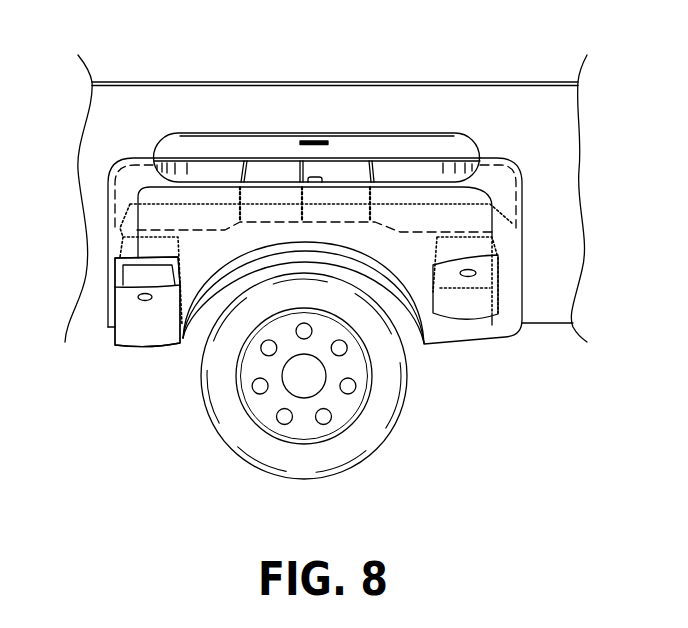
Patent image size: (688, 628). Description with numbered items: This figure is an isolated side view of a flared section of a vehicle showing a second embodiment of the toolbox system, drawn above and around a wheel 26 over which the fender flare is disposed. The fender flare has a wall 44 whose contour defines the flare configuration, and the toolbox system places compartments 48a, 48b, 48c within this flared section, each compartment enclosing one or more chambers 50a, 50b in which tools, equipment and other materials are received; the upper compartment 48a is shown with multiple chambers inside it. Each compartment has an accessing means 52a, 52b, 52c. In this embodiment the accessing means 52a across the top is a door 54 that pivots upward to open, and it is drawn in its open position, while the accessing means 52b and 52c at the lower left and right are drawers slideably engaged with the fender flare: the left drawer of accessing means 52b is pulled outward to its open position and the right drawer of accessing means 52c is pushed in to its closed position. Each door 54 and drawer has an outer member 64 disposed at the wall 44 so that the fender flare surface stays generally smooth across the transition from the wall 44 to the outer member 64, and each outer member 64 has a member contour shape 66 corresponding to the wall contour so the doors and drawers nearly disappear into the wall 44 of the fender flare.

The wheel 26 is at (241, 475).
The wall 44 is at (492, 187).
The compartment 48a is at (530, 207).
The compartment 48b is at (106, 244).
The compartment 48c is at (512, 252).
The chamber 50a is at (418, 156).
The chamber 50b is at (125, 275).
The accessing means 52a is at (237, 132).
The accessing means 52b is at (135, 360).
The accessing means 52c is at (473, 327).
The door 54 is at (347, 142).
The outer member 64 is at (128, 310).
The member contour shape 66 is at (121, 333).